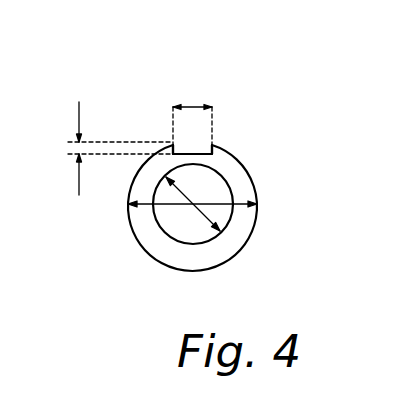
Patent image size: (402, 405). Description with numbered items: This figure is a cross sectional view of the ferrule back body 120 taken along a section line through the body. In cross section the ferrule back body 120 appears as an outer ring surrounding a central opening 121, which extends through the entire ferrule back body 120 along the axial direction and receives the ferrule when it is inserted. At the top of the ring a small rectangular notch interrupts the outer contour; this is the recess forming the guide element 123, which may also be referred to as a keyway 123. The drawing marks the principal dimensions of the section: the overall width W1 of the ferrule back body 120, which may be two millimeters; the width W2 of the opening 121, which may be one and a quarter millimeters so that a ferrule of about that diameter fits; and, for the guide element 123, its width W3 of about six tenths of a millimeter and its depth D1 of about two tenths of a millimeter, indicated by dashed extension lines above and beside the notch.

The ferrule back body 120 is at (127, 110).
The opening 121 is at (185, 224).
The guide element 123 is at (188, 153).
The width of the ferrule back body W1 is at (222, 198).
The width of the opening W2 is at (212, 217).
The width of the recess W3 is at (191, 110).
The depth of the recess D1 is at (105, 150).